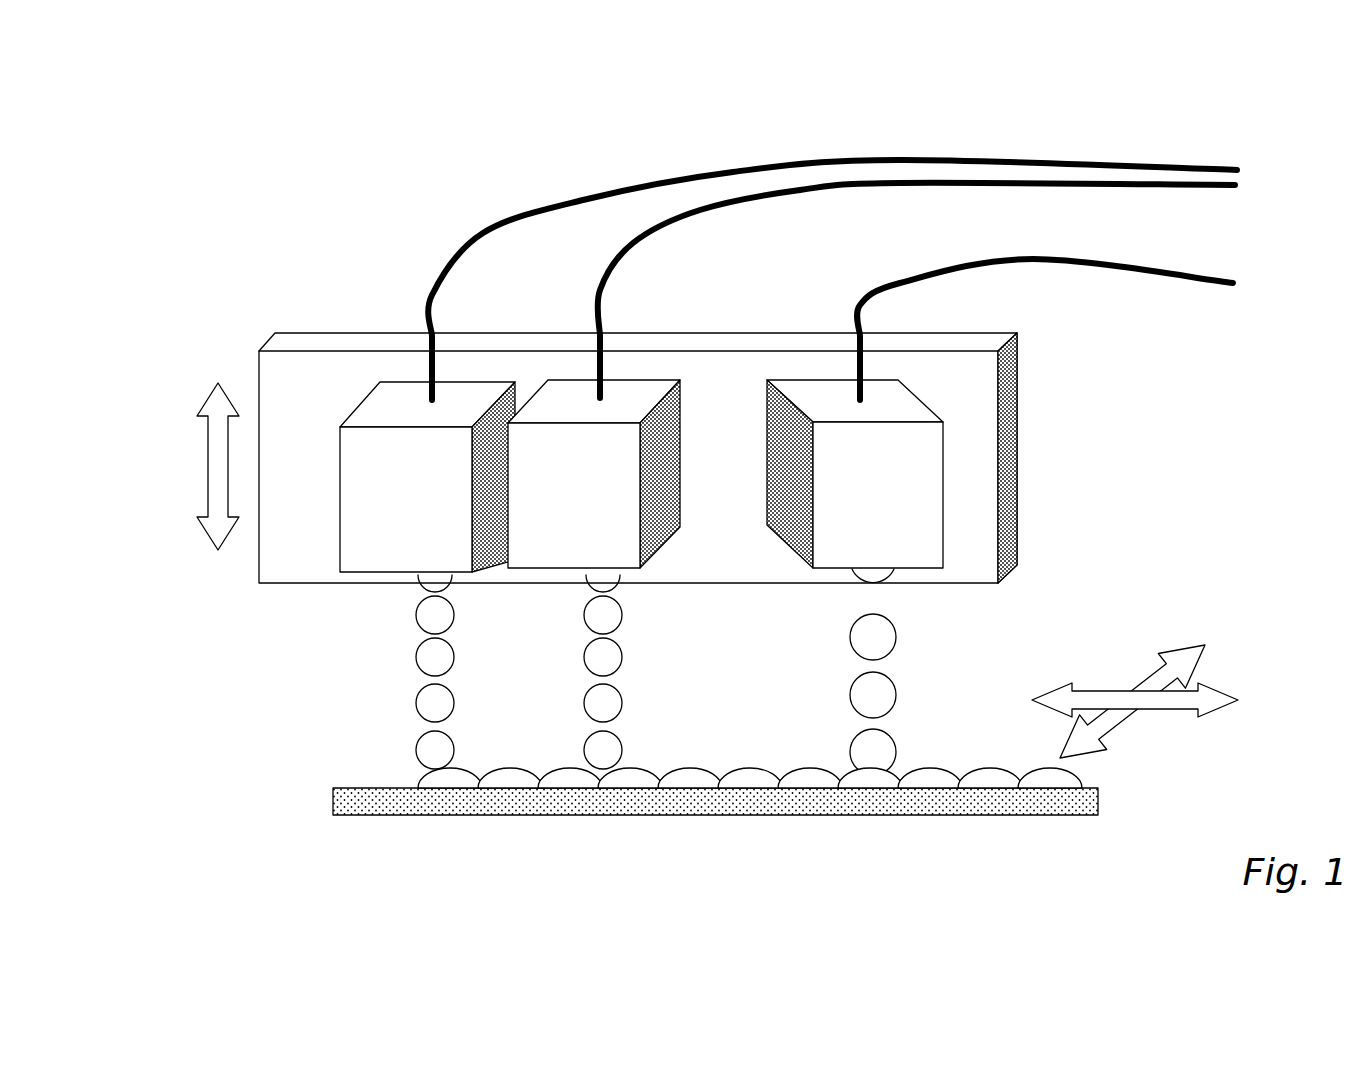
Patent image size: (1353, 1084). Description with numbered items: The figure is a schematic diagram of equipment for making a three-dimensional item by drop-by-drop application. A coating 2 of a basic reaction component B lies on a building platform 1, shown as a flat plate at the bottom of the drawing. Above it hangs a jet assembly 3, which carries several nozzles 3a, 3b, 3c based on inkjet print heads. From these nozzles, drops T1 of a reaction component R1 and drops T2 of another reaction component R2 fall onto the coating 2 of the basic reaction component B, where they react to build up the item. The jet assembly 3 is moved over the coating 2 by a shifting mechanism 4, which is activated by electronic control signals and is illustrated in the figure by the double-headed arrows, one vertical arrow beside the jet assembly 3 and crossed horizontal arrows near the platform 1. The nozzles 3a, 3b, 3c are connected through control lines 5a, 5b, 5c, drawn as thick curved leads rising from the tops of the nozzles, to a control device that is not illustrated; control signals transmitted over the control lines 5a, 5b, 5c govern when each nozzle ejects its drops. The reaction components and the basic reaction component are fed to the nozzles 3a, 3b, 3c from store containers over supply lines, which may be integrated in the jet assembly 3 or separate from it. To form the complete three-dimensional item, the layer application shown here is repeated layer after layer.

The building platform 1 is at (1085, 800).
The coating 2 is at (510, 780).
The jet assembly 3 is at (980, 400).
The nozzle 3a is at (353, 545).
The nozzle 3b is at (632, 402).
The nozzle 3c is at (918, 487).
The shifting mechanism 4 is at (213, 472).
The control line 5a is at (540, 215).
The control line 5b is at (1235, 187).
The control line 5c is at (1240, 285).
The drops of reaction component R1 T1 is at (427, 657).
The drops of reaction component R2 T2 is at (608, 657).